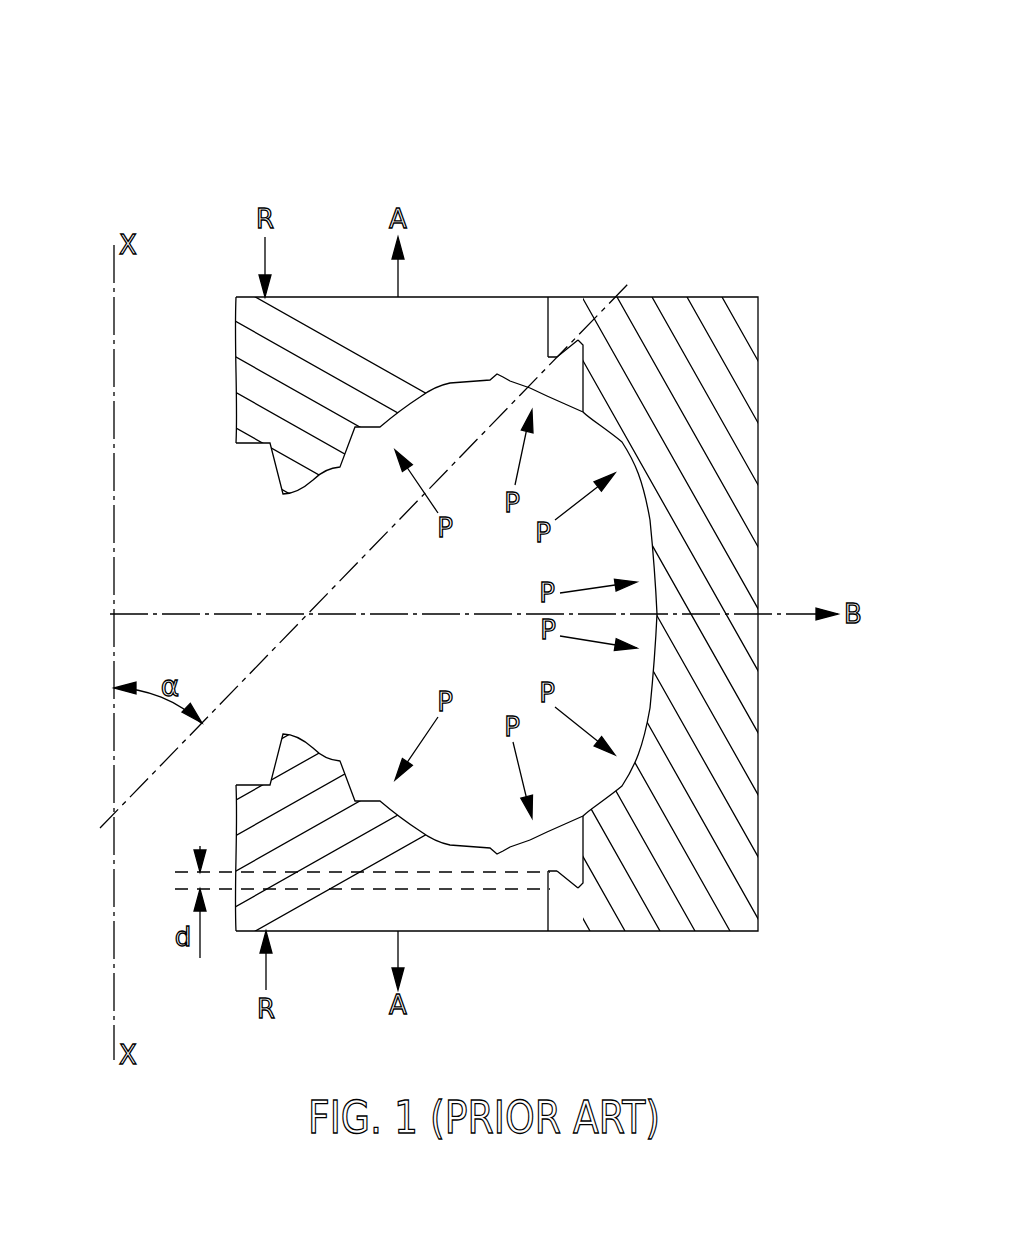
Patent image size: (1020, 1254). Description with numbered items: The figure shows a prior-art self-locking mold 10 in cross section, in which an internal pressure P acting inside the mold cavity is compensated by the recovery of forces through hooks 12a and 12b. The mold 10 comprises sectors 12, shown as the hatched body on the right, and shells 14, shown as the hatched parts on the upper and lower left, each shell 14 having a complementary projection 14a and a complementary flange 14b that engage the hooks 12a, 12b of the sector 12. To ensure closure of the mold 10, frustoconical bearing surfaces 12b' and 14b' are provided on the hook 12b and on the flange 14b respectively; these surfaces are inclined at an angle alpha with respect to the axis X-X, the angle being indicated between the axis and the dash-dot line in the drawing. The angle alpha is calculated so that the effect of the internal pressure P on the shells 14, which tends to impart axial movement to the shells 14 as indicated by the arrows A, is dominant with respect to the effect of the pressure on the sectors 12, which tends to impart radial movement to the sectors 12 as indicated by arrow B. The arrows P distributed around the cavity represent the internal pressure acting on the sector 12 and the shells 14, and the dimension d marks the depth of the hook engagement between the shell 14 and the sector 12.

The self-locking mold 10 is at (262, 115).
The sector 12 is at (722, 562).
The hook 12a is at (563, 333).
The hook 12b is at (513, 614).
The frustoconical bearing surface 12b' is at (564, 614).
The shell 14 is at (330, 335).
The complementary projection 14a is at (572, 396).
The complementary flange 14b is at (707, 615).
The frustoconical bearing surface 14b' is at (649, 613).